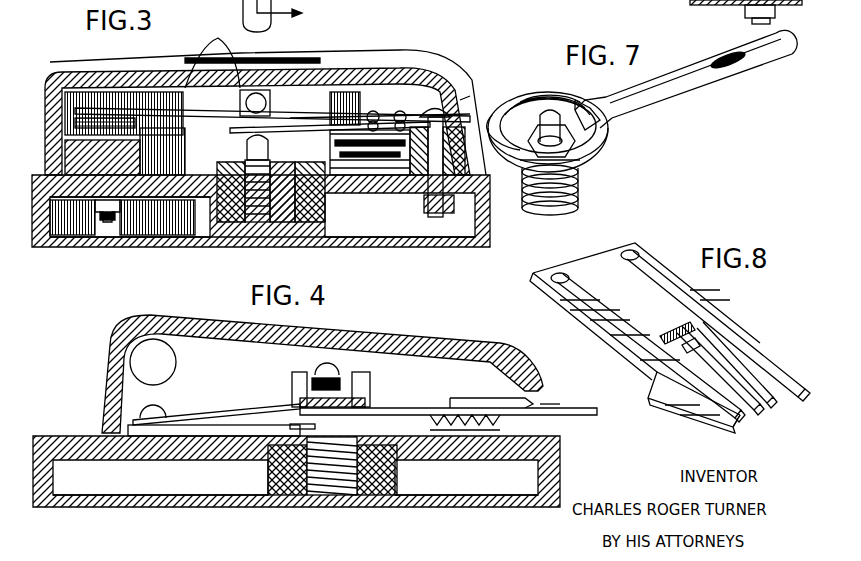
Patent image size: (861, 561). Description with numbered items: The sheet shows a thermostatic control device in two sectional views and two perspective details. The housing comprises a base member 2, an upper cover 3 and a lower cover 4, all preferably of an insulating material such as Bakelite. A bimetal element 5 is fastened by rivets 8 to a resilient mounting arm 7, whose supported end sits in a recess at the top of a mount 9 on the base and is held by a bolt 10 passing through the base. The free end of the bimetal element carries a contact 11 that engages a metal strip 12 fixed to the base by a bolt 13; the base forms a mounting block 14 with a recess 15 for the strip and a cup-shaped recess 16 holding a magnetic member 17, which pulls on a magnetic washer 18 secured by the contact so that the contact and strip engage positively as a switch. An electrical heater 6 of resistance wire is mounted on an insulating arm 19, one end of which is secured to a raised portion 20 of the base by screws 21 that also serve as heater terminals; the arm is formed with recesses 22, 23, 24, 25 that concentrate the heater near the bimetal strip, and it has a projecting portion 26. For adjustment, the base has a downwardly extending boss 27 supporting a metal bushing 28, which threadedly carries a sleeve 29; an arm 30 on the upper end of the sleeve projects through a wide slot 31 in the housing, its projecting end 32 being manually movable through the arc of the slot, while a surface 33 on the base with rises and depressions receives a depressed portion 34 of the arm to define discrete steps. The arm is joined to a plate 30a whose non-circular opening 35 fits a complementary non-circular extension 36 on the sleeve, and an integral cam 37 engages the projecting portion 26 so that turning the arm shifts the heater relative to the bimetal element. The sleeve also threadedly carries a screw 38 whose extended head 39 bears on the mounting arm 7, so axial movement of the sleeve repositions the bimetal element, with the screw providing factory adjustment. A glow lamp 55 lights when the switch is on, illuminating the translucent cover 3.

In FIG. 3, the base member 2 is at (362, 193).
In FIG. 7, the base member 2 is at (745, 19).
In FIG. 4, the base member 2 is at (442, 460).
In FIG. 3, the upper cover 3 is at (403, 70).
In FIG. 4, the upper cover 3 is at (395, 343).
In FIG. 3, the lower cover 4 is at (397, 240).
In FIG. 4, the lower cover 4 is at (417, 505).
In FIG. 3, the bimetal element 5 is at (328, 118).
In FIG. 4, the bimetal element 5 is at (352, 381).
In FIG. 8, the electrical heater 6 is at (670, 293).
In FIG. 4, the electrical heater 6 is at (258, 418).
In FIG. 3, the resilient mounting arm 7 is at (280, 130).
In FIG. 4, the resilient mounting arm 7 is at (367, 392).
In FIG. 3, the rivets 8 is at (400, 114).
In FIG. 4, the rivets 8 is at (330, 372).
In FIG. 3, the mount 9 is at (450, 118).
In FIG. 4, the mount 9 is at (303, 395).
In FIG. 3, the bolt 10 is at (470, 90).
In FIG. 3, the contact 11 is at (75, 111).
In FIG. 3, the metal strip 12 is at (62, 155).
In FIG. 3, the bolt 13 is at (106, 224).
In FIG. 3, the mounting block 14 is at (77, 143).
In FIG. 3, the recess 15 is at (75, 124).
In FIG. 3, the cup-shaped recess 16 is at (110, 178).
In FIG. 3, the magnetic member 17 is at (95, 197).
In FIG. 3, the magnetic washer 18 is at (78, 87).
In FIG. 8, the insulating arm 19 is at (625, 292).
In FIG. 4, the raised portion 20 is at (148, 432).
In FIG. 4, the screws 21 is at (163, 410).
In FIG. 8, the recess 22 is at (733, 428).
In FIG. 8, the recess 23 is at (780, 392).
In FIG. 8, the recess 24 is at (688, 348).
In FIG. 8, the recess 25 is at (708, 352).
In FIG. 8, the projecting portion 26 is at (680, 398).
In FIG. 3, the boss 27 is at (305, 215).
In FIG. 4, the boss 27 is at (267, 472).
In FIG. 3, the bushing 28 is at (283, 222).
In FIG. 4, the bushing 28 is at (297, 486).
In FIG. 3, the sleeve 29 is at (237, 212).
In FIG. 7, the sleeve 29 is at (523, 180).
In FIG. 4, the sleeve 29 is at (332, 482).
In FIG. 7, the arm 30 is at (683, 83).
In FIG. 4, the arm 30 is at (578, 417).
In FIG. 7, the plate 30a is at (578, 143).
In FIG. 4, the plate 30a is at (290, 427).
In FIG. 4, the slot 31 is at (534, 398).
In FIG. 3, the projecting end 32 is at (265, 12).
In FIG. 4, the surface 33 is at (433, 423).
In FIG. 7, the depressed portion 34 is at (718, 57).
In FIG. 4, the depressed portion 34 is at (560, 406).
In FIG. 7, the non-circular opening 35 is at (572, 137).
In FIG. 7, the non-circular extension 36 is at (565, 157).
In FIG. 3, the cam 37 is at (325, 188).
In FIG. 7, the cam 37 is at (548, 100).
In FIG. 3, the screw 38 is at (262, 218).
In FIG. 3, the extended head 39 is at (249, 139).
In FIG. 7, the extended head 39 is at (583, 100).
In FIG. 4, the glow lamp 55 is at (150, 362).